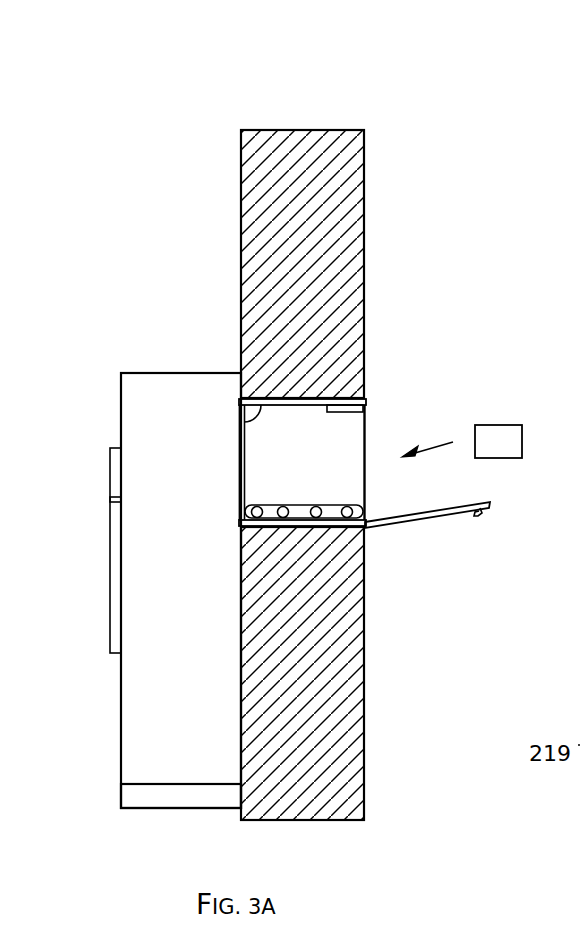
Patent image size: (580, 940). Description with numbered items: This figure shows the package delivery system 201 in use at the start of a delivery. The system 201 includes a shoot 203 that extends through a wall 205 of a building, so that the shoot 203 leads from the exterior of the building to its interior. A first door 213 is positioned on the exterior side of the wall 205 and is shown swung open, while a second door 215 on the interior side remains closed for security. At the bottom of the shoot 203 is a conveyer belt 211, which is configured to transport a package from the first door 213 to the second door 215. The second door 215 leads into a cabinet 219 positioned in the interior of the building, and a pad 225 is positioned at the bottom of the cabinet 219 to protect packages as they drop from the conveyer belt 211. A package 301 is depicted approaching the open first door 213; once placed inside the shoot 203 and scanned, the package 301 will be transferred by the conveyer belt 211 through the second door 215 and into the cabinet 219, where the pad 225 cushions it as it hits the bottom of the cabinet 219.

The system 201 is at (148, 58).
The shoot 203 is at (290, 398).
The wall 205 is at (302, 130).
The conveyer belt 211 is at (270, 505).
The first door 213 is at (402, 524).
The second door 215 is at (240, 465).
The cabinet 219 is at (121, 399).
The pad 225 is at (153, 784).
The package 301 is at (497, 425).